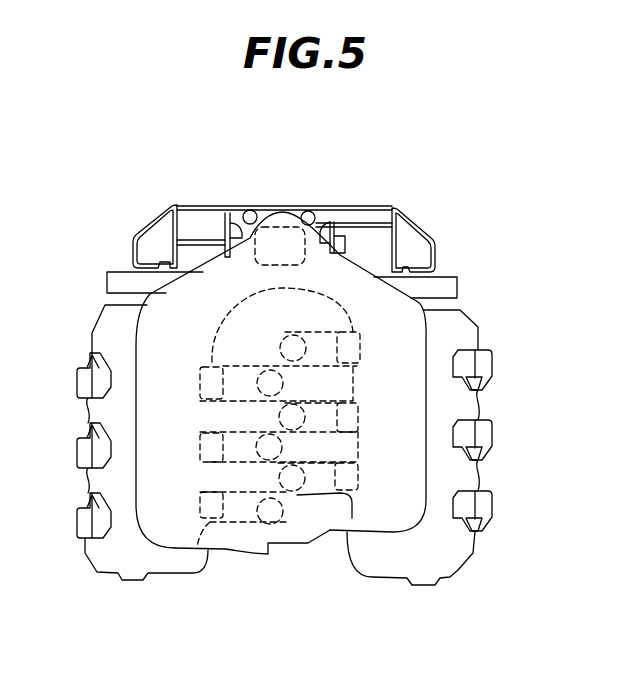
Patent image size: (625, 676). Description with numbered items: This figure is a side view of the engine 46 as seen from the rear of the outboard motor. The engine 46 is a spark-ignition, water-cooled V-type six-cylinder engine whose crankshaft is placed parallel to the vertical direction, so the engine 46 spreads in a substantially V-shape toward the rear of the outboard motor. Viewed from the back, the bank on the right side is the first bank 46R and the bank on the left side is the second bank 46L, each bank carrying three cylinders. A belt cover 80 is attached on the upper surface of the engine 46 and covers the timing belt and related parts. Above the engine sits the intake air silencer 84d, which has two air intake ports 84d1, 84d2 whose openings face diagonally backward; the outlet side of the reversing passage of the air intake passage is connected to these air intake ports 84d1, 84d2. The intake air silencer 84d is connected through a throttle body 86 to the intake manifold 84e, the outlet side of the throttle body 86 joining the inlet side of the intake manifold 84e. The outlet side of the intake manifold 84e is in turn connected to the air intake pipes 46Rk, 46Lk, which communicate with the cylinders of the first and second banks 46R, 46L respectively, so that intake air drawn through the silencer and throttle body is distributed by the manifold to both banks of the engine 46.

The engine 46 is at (490, 300).
The second bank 46L is at (91, 576).
The first bank 46R is at (454, 583).
The air intake pipe 46Lk is at (268, 527).
The air intake pipe 46Rk is at (292, 500).
The belt cover 80 is at (107, 287).
The intake air silencer 84d is at (215, 205).
The air intake port 84d1 is at (155, 240).
The air intake port 84d2 is at (410, 238).
The intake manifold 84e is at (406, 408).
The throttle body 86 is at (264, 207).